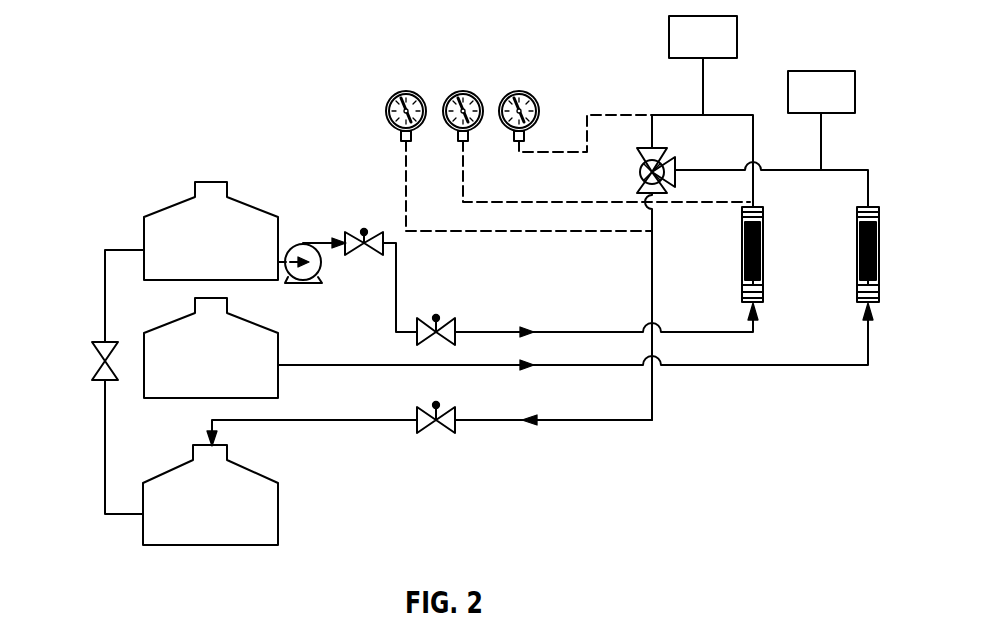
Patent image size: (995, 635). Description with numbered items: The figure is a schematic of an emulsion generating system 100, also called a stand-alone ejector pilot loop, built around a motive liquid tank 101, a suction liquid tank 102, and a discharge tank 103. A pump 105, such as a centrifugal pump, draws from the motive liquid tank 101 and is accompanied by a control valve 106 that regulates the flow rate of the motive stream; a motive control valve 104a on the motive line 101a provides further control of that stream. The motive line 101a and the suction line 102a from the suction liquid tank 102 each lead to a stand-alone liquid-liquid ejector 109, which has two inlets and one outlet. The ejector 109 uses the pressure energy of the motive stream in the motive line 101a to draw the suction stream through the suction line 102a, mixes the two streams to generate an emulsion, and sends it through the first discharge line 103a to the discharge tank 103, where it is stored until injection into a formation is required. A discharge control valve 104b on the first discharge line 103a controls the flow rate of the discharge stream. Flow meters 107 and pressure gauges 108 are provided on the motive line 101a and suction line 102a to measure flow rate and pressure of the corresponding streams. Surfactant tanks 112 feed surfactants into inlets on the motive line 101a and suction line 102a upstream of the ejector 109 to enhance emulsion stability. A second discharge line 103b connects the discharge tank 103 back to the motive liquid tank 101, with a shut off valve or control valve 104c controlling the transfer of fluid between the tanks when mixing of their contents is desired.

The emulsion generating system 100 is at (276, 86).
The motive liquid tank 101 is at (233, 244).
The suction liquid tank 102 is at (232, 362).
The discharge tank 103 is at (232, 510).
The motive line 101a is at (581, 330).
The suction line 102a is at (802, 366).
The first discharge line 103a is at (367, 421).
The second discharge line 103b is at (105, 475).
The motive control valve 104a is at (455, 327).
The discharge control valve 104b is at (437, 426).
The shut off valve or control valve 104c is at (100, 359).
The pump 105 is at (312, 284).
The control valve 106 is at (345, 240).
The flow meter 107 is at (763, 289).
The pressure gauge 108 is at (408, 91).
The stand-alone liquid-liquid ejector 109 is at (637, 152).
The surfactant tank 112 is at (723, 51).